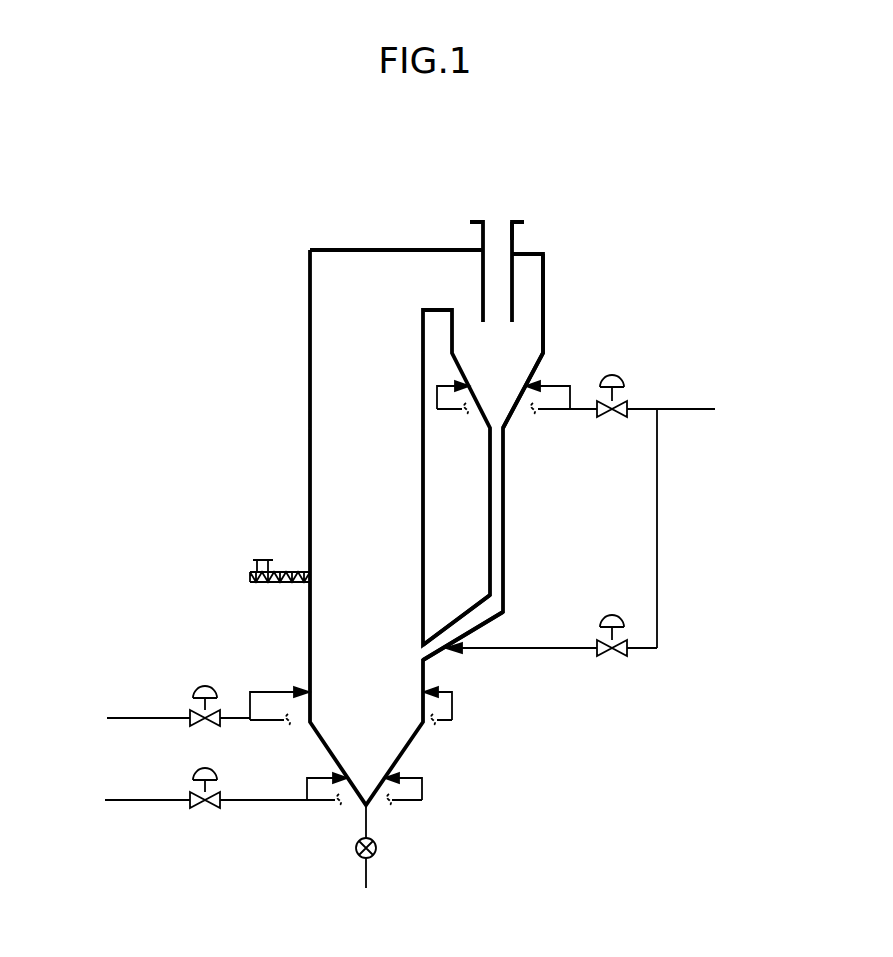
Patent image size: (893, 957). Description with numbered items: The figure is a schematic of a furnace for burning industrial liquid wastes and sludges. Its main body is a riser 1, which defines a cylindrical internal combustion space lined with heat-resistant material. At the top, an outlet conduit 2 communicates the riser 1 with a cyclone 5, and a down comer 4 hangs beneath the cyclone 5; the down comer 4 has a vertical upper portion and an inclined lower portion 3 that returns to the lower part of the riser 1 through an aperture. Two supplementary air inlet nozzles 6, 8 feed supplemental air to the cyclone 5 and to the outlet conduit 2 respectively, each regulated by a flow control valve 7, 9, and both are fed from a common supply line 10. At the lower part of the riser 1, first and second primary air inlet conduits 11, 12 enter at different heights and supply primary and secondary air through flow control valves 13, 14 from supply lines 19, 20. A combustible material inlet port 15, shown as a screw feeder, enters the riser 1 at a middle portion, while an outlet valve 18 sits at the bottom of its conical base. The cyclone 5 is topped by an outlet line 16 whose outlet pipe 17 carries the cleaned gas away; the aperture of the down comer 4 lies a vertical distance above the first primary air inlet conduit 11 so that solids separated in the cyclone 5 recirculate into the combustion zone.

The riser 1 is at (348, 430).
The outlet conduit 2 is at (398, 278).
The connecting passage 3 is at (468, 612).
The down comer 4 is at (505, 500).
The cyclone 5 is at (545, 275).
The supplementary air inlet nozzle 6 is at (562, 385).
The flow control valve 7 is at (612, 375).
The supplementary air inlet nozzle 8 is at (545, 645).
The flow control valve 9 is at (612, 616).
The gas supply line 10 is at (664, 518).
The first primary air inlet conduit 11 is at (268, 690).
The second primary air inlet conduit 12 is at (410, 776).
The flow control valve 13 is at (202, 686).
The flow control valve 14 is at (203, 768).
The combustible material inlet port 15 is at (262, 560).
The outlet line 16 is at (515, 238).
The outlet pipe 17 is at (495, 225).
The outlet valve 18 is at (376, 848).
The gas supply line 19 is at (154, 718).
The gas supply line 20 is at (181, 800).